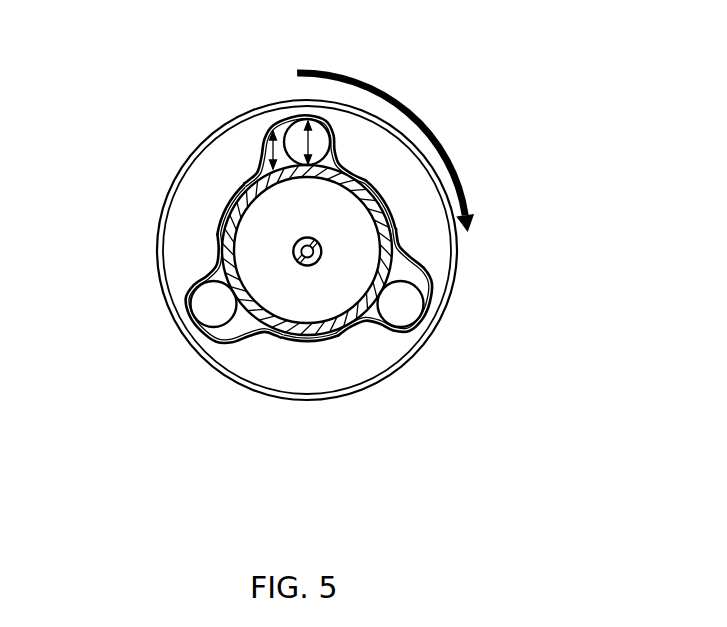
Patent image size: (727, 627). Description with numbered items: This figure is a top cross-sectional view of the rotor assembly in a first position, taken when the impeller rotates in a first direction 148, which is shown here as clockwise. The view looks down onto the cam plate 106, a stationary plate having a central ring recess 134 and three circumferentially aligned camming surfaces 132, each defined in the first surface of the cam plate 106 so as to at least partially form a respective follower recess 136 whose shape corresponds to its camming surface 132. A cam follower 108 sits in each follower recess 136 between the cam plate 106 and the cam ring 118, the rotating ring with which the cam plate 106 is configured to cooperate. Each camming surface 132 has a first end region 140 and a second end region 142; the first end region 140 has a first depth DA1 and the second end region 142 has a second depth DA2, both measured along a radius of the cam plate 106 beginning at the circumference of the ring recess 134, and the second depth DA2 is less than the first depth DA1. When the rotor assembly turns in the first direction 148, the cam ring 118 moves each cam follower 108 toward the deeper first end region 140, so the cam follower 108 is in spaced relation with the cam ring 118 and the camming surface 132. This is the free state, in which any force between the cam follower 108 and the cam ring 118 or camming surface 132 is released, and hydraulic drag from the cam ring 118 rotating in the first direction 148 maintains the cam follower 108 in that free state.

The cam plate 106 is at (345, 362).
The cam follower 108 is at (332, 140).
The cam ring 118 is at (329, 206).
The camming surface 132 is at (283, 126).
The ring recess 134 is at (391, 205).
The follower recess 136 is at (326, 256).
The first end region 140 is at (260, 271).
The second end region 142 is at (260, 288).
The first direction 148 is at (460, 172).
The first depth DA1 is at (299, 135).
The second depth DA2 is at (270, 152).